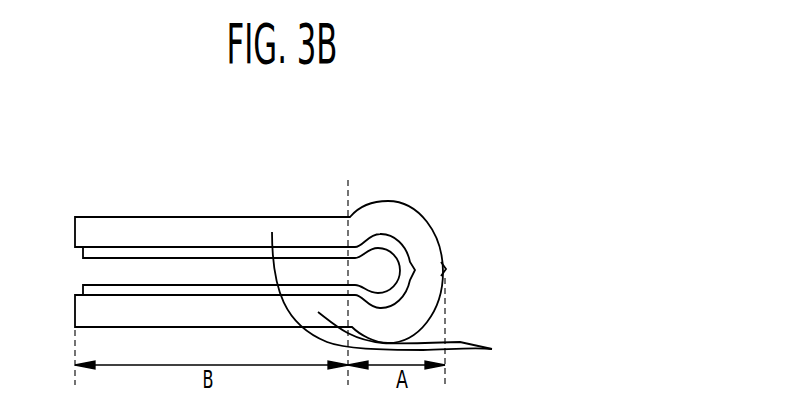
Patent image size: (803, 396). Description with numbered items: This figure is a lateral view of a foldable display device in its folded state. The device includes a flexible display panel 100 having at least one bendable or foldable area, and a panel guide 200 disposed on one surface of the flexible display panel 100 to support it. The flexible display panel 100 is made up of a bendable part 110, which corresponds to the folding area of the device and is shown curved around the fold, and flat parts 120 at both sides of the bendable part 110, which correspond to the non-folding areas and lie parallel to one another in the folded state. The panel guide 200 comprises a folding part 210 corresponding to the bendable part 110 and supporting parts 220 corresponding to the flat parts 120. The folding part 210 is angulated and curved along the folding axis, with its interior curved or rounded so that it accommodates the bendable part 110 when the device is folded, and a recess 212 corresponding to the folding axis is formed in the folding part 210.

The flexible display panel 100 is at (290, 139).
The bendable part 110 is at (385, 243).
The flat parts 120 is at (340, 290).
The panel guide 200 is at (527, 293).
The folding part 210 is at (427, 293).
The recess 212 is at (446, 272).
The supporting parts 220 is at (398, 298).